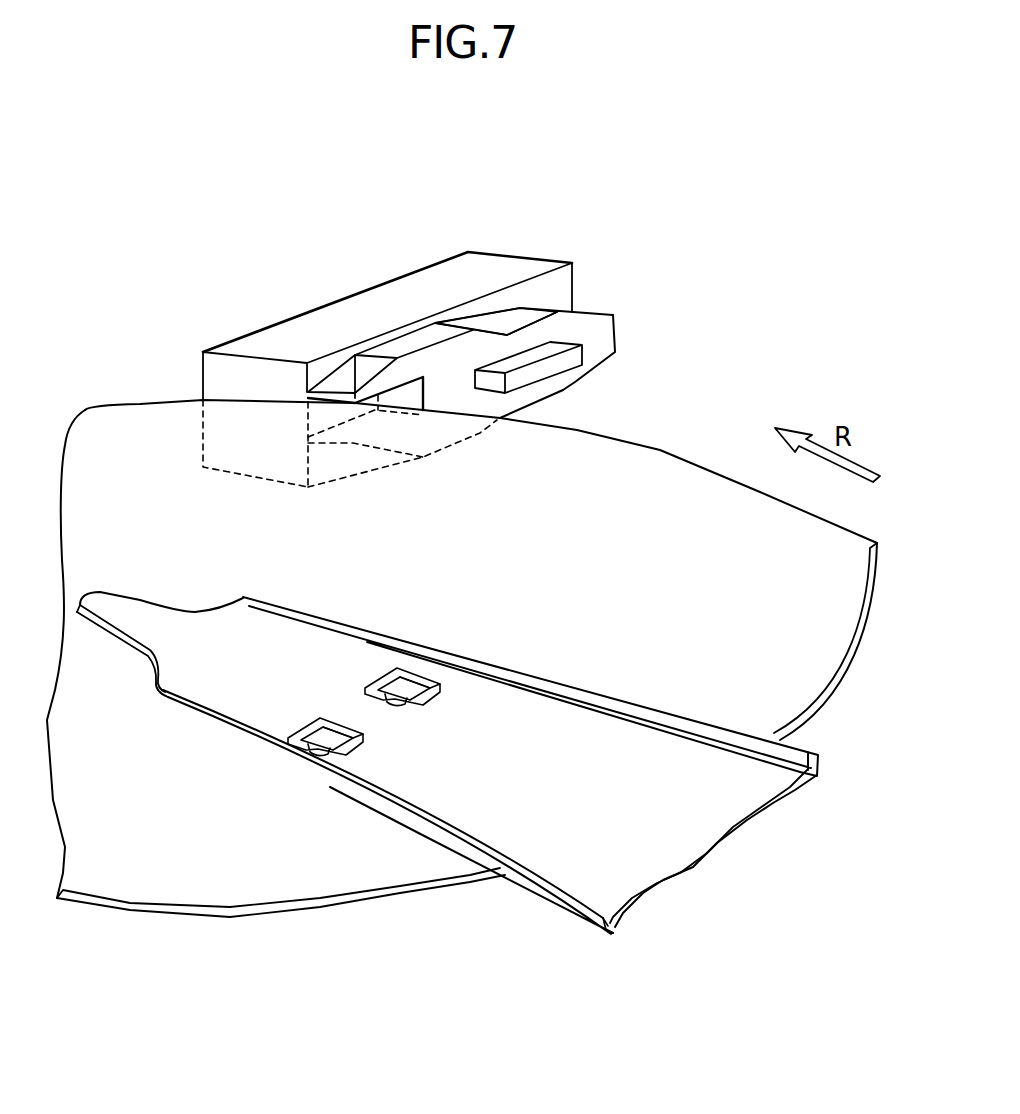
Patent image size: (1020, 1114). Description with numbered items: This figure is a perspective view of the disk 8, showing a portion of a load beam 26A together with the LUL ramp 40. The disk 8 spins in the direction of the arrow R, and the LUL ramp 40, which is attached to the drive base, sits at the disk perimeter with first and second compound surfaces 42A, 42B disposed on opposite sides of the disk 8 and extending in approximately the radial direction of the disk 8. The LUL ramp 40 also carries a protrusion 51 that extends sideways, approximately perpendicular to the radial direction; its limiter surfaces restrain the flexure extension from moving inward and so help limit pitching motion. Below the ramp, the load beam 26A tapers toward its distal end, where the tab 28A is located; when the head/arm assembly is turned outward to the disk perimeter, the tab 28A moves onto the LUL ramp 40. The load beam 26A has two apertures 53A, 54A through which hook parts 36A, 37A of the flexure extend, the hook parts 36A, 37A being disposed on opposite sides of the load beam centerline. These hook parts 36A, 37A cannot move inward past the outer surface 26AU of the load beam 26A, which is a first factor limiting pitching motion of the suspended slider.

The disk 8 is at (673, 452).
The LUL ramp 40 is at (287, 320).
The first compound surface 42A is at (468, 315).
The second compound surface 42B is at (552, 399).
The protrusion 51 is at (585, 354).
The load beam 26A is at (594, 866).
The outer surface of load beam 26AU is at (648, 760).
The tab 28A is at (110, 610).
The aperture 53A is at (378, 682).
The aperture 54A is at (300, 727).
The hook part 36A is at (420, 692).
The hook part 37A is at (342, 743).